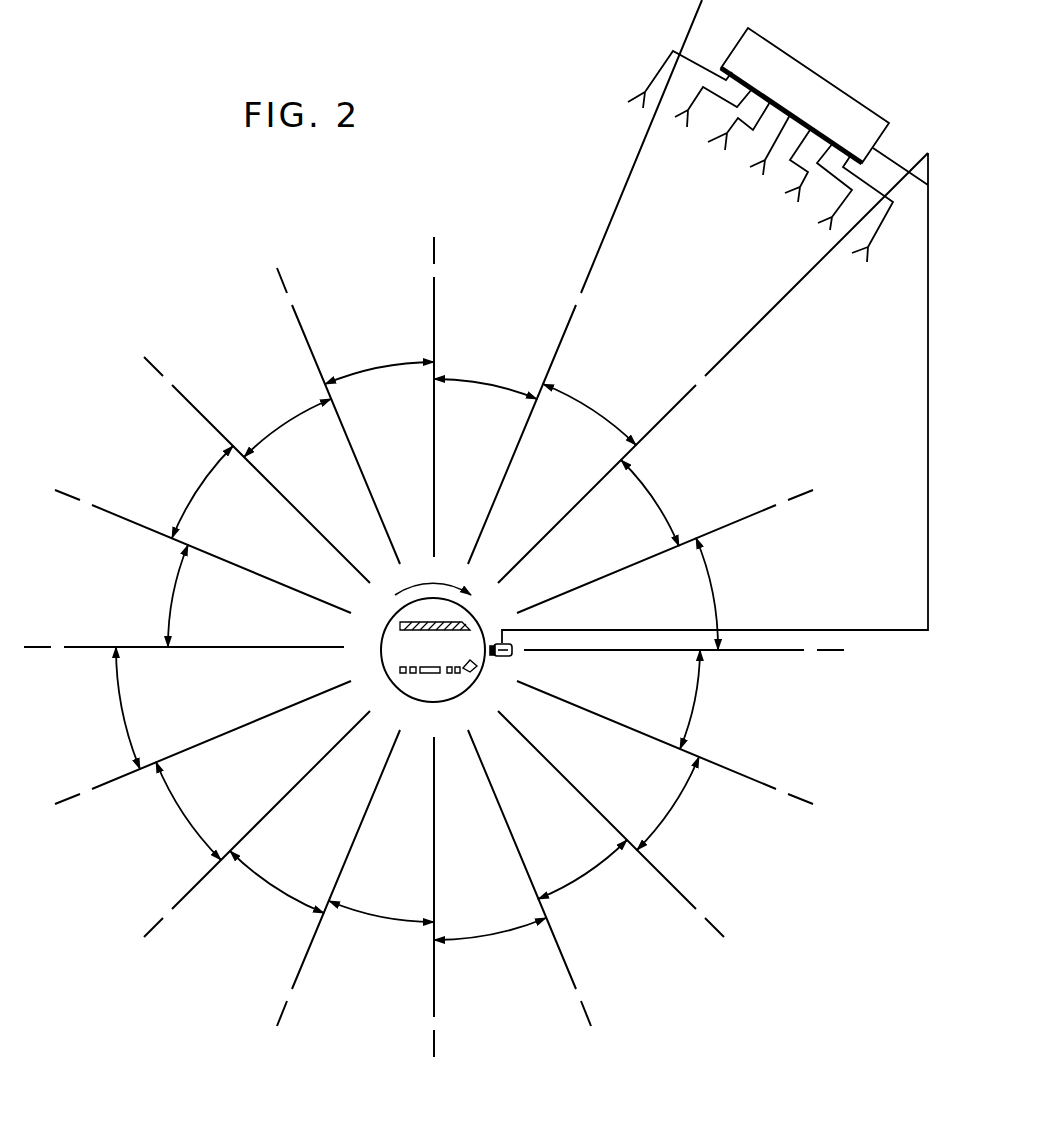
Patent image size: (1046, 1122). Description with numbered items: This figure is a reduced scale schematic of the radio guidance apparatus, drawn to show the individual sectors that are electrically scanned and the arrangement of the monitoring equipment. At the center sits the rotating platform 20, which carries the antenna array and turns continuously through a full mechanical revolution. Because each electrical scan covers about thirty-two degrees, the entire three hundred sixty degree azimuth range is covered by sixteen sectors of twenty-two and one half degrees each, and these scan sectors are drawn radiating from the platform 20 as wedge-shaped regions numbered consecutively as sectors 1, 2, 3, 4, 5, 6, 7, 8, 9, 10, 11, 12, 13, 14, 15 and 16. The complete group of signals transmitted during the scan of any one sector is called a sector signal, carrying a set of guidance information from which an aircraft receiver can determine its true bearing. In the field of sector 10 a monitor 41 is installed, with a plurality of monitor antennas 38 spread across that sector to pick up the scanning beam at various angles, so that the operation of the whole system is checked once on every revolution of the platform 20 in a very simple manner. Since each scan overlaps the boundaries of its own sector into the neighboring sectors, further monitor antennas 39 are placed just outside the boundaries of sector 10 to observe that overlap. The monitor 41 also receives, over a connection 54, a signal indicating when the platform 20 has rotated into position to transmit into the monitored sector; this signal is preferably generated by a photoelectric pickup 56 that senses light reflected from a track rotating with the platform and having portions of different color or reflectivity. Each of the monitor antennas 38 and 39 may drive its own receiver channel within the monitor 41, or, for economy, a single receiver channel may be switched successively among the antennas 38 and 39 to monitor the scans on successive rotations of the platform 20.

The scan sector 1 is at (384, 916).
The scan sector 2 is at (270, 887).
The scan sector 3 is at (184, 820).
The scan sector 4 is at (120, 707).
The scan sector 5 is at (167, 594).
The scan sector 6 is at (203, 477).
The scan sector 7 is at (288, 416).
The scan sector 8 is at (393, 367).
The scan sector 9 is at (490, 380).
The scan sector 10 is at (583, 396).
The scan sector 11 is at (653, 490).
The scan sector 12 is at (710, 580).
The scan sector 13 is at (698, 711).
The scan sector 14 is at (662, 836).
The scan sector 15 is at (594, 878).
The scan sector 16 is at (504, 928).
The platform 20 is at (408, 694).
The monitor antennas 38 is at (676, 118).
The monitor antennas 39 is at (628, 100).
The monitor 41 is at (860, 108).
The connection 54 is at (928, 402).
The photoelectric pickup 56 is at (513, 656).